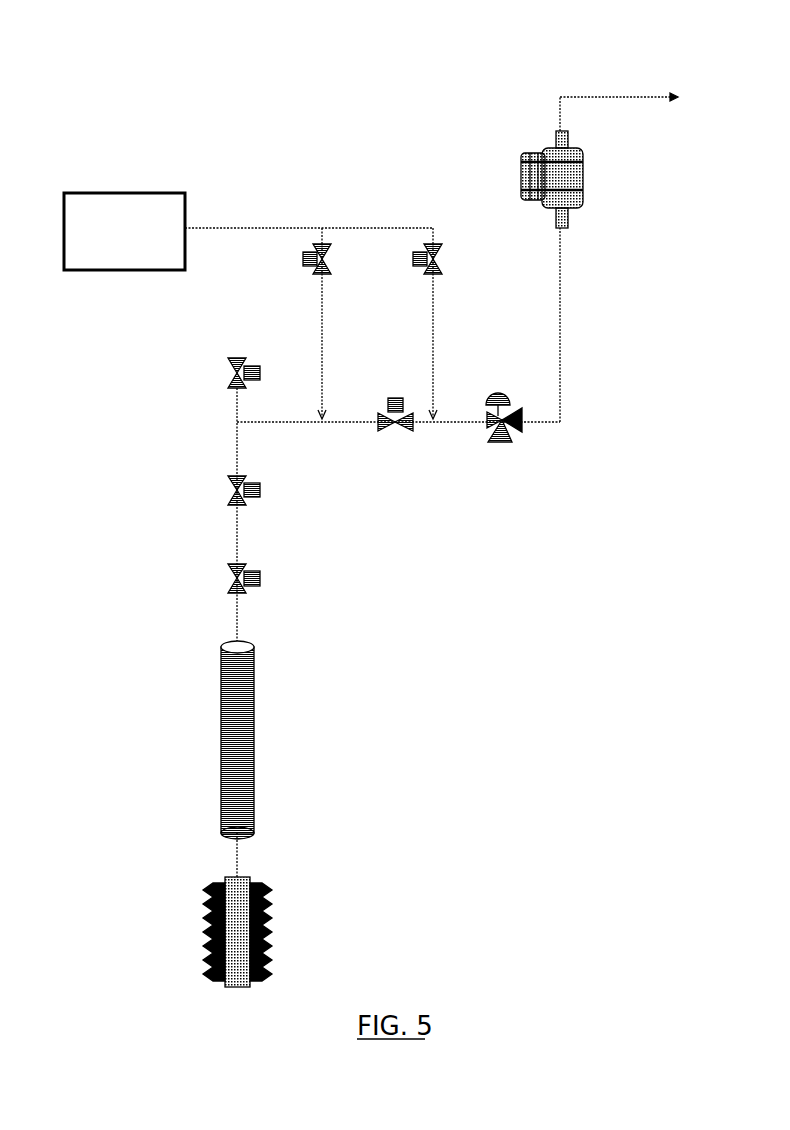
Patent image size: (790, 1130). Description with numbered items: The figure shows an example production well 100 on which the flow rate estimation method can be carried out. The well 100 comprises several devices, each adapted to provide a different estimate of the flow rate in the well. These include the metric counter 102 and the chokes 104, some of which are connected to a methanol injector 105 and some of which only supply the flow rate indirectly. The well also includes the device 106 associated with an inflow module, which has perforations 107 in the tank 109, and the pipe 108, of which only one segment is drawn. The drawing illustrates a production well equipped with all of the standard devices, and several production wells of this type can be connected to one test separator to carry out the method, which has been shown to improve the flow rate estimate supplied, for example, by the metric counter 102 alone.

The well 100 is at (523, 60).
The metric counter 102 is at (585, 183).
The chokes 104 is at (412, 264).
The methanol injector 105 is at (120, 272).
The device associated with an inflow module 106 is at (273, 955).
The perforations 107 is at (182, 924).
The pipe 108 is at (240, 738).
The tank 109 is at (386, 941).